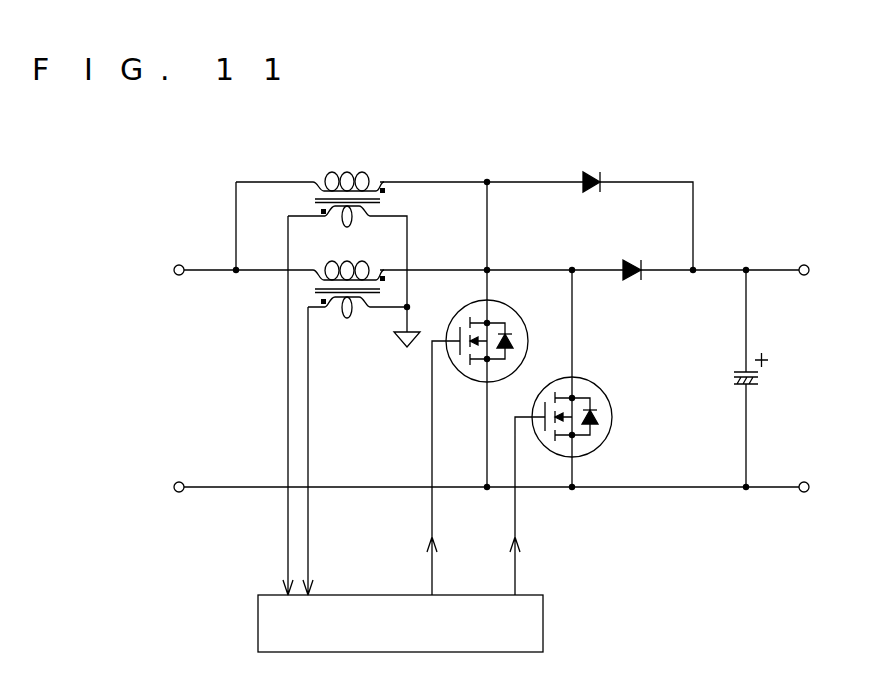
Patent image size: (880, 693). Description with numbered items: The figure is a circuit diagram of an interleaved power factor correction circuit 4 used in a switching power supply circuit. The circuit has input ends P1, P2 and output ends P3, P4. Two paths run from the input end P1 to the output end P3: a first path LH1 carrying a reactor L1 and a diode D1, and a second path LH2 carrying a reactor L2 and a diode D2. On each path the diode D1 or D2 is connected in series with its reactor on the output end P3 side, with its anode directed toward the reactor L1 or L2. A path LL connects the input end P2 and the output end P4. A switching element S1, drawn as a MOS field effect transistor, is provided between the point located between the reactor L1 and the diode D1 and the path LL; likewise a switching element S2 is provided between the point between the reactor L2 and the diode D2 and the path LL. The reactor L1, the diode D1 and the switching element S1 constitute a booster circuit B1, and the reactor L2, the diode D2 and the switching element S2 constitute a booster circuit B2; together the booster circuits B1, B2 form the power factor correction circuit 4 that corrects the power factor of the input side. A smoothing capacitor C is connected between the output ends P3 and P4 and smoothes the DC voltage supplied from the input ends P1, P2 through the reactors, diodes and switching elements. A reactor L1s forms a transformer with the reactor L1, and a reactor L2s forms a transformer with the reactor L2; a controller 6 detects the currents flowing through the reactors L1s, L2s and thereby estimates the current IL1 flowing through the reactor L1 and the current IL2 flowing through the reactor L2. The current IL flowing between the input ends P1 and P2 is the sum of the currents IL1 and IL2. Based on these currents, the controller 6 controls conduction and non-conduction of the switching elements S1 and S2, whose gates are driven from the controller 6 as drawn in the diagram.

The reactor L1 is at (330, 172).
The reactor L1s is at (315, 212).
The reactor L2 is at (358, 262).
The reactor L2s is at (333, 317).
The current IL is at (218, 261).
The current IL1 is at (454, 174).
The current IL2 is at (471, 261).
The input end P1 is at (181, 289).
The input end P2 is at (181, 469).
The output end P3 is at (803, 252).
The output end P4 is at (804, 468).
The diode D1 is at (590, 197).
The diode D2 is at (626, 259).
The path LH1 is at (650, 180).
The path LH2 is at (598, 282).
The path LL is at (343, 487).
The switching element S1 is at (515, 307).
The switching element S2 is at (605, 383).
The smoothing capacitor C is at (765, 377).
The booster circuit B1 is at (498, 450).
The booster circuit B2 is at (578, 507).
The power factor correction circuit 4 is at (670, 587).
The controller 6 is at (258, 632).